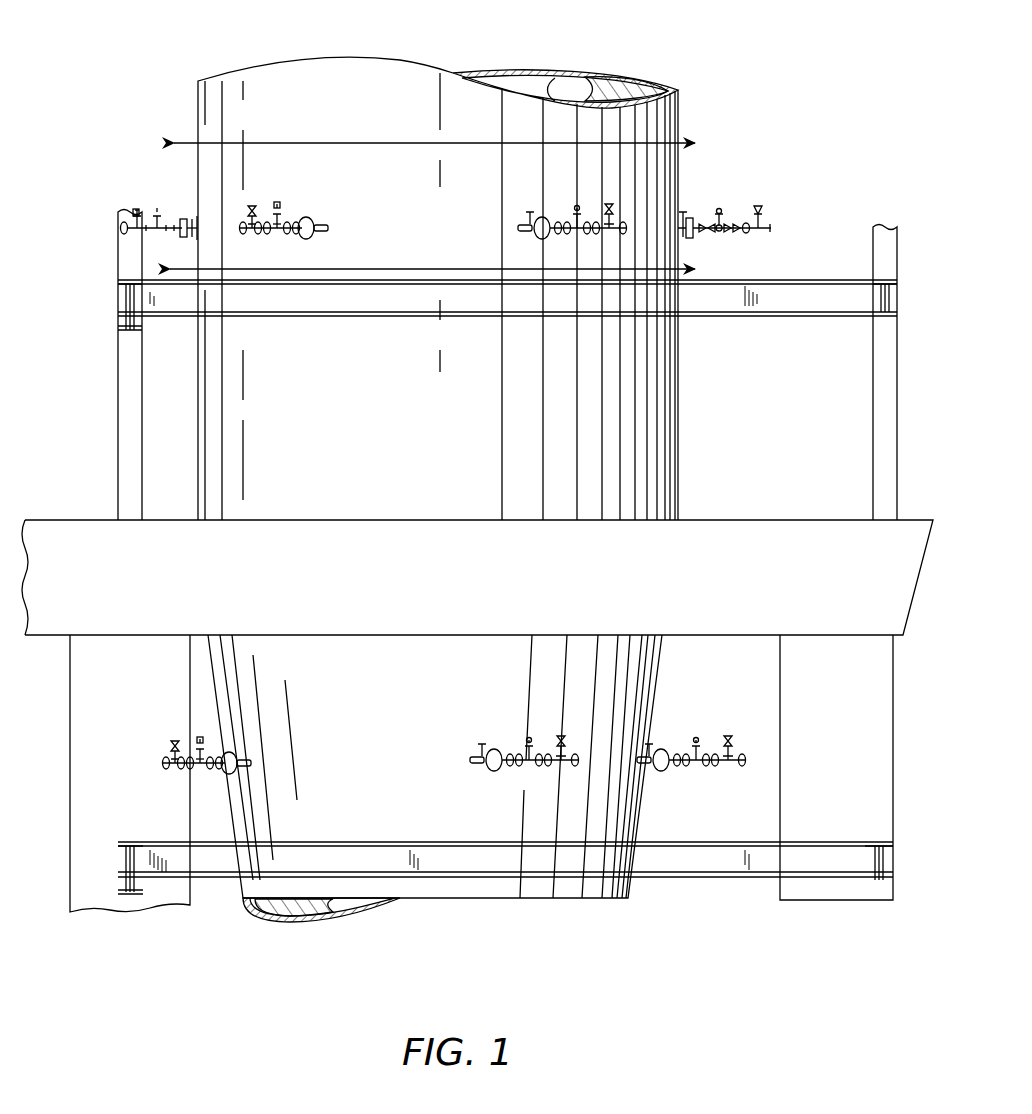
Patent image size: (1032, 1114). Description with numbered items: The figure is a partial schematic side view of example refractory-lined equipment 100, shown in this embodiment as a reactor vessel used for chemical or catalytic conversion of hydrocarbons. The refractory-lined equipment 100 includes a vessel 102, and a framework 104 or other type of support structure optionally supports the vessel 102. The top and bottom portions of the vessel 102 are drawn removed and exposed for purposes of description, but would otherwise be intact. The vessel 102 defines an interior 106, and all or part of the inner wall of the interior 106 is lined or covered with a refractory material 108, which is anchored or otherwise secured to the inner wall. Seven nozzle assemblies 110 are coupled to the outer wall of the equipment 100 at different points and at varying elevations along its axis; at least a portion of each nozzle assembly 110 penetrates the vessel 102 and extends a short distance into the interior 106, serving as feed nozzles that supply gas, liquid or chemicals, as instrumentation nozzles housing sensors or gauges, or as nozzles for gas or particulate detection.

The refractory-lined equipment 100 is at (818, 93).
The vessel 102 is at (679, 397).
The framework 104 is at (771, 520).
The interior 106 is at (543, 72).
The refractory material 108 is at (648, 86).
The nozzle assemblies 110 is at (246, 198).